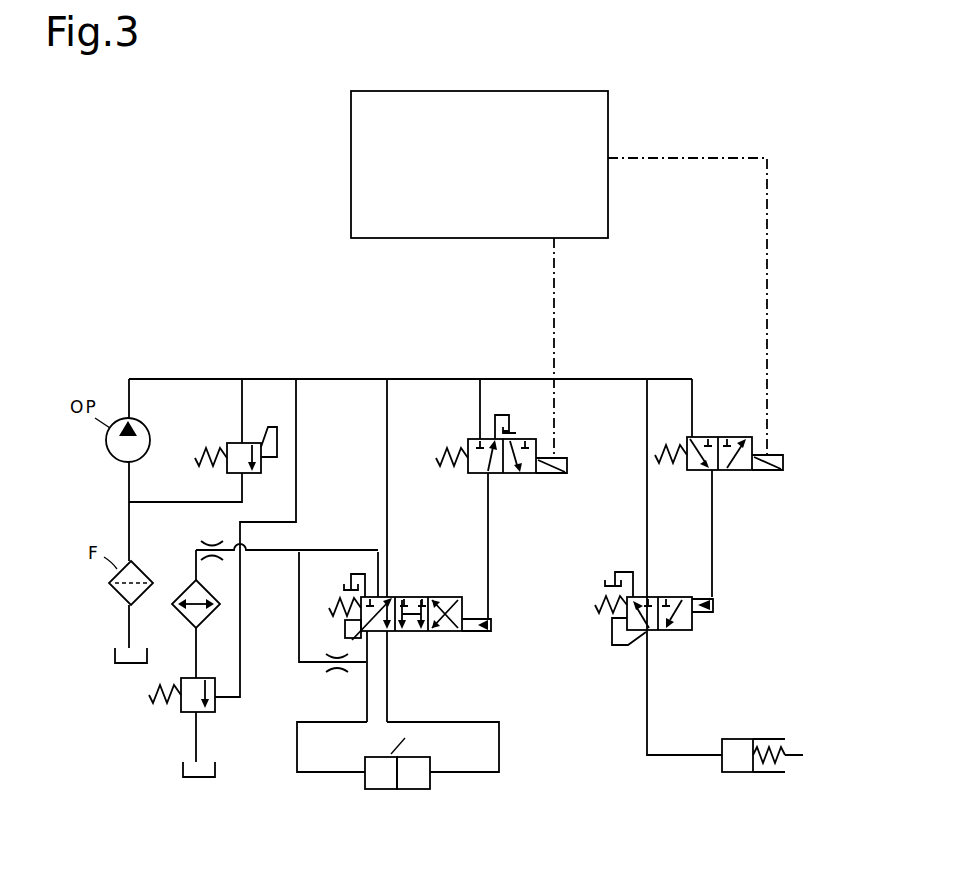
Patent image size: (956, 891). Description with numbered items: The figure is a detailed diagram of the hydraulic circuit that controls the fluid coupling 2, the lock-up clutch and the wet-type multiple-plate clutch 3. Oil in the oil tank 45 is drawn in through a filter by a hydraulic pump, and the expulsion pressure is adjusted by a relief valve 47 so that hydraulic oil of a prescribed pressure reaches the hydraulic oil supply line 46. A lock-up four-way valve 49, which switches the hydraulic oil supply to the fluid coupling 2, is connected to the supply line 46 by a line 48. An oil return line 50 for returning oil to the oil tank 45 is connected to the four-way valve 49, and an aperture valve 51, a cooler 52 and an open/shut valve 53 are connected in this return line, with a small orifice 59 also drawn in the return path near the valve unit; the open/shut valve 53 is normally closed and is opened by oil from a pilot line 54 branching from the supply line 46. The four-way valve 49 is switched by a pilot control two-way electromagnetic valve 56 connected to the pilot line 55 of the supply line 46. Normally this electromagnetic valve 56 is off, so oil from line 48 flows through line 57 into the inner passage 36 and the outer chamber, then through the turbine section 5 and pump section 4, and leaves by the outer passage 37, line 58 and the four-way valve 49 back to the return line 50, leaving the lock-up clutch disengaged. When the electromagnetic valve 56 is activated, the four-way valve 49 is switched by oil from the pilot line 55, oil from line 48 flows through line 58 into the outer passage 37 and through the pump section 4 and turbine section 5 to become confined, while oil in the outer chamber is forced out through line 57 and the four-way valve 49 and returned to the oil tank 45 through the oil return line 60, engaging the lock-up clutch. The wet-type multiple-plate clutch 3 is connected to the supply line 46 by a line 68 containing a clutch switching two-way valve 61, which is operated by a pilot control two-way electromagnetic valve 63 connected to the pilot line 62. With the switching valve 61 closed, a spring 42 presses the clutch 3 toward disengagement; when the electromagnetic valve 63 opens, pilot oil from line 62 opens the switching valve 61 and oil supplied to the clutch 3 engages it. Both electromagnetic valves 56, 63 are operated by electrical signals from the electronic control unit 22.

The electronic control unit 22 is at (351, 182).
The hydraulic oil supply line 46 is at (352, 379).
The relief valve 47 is at (226, 444).
The pilot line 54 is at (296, 492).
The aperture valve 51 is at (208, 540).
The cooler 52 is at (184, 592).
The open/shut valve 53 is at (186, 713).
The oil tank 45 is at (114, 655).
The oil return line 50 is at (320, 552).
The oil return line 60 is at (366, 574).
The lock-up four-way valve 49 is at (404, 597).
The line 48 is at (388, 456).
The orifice 59 is at (336, 656).
The line 58 is at (367, 700).
The line 57 is at (388, 688).
The outer passage 37 is at (322, 773).
The inner passage 36 is at (457, 773).
The pump section 4 is at (378, 790).
The turbine section 5 is at (413, 790).
The fluid coupling 2 is at (393, 798).
The pilot control two-way electromagnetic valve 56 is at (512, 474).
The pilot line 55 is at (490, 538).
The line 68 is at (647, 516).
The pilot control two-way electromagnetic valve 63 is at (716, 436).
The pilot line 62 is at (712, 543).
The clutch switching two-way valve 61 is at (676, 634).
The wet-type multiple-plate clutch 3 is at (749, 778).
The spring 42 is at (762, 742).